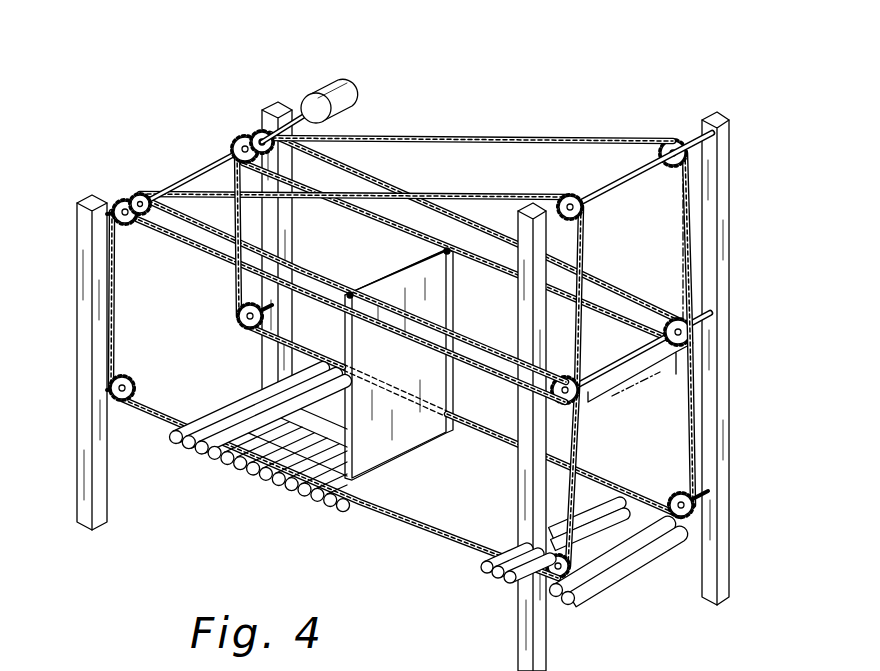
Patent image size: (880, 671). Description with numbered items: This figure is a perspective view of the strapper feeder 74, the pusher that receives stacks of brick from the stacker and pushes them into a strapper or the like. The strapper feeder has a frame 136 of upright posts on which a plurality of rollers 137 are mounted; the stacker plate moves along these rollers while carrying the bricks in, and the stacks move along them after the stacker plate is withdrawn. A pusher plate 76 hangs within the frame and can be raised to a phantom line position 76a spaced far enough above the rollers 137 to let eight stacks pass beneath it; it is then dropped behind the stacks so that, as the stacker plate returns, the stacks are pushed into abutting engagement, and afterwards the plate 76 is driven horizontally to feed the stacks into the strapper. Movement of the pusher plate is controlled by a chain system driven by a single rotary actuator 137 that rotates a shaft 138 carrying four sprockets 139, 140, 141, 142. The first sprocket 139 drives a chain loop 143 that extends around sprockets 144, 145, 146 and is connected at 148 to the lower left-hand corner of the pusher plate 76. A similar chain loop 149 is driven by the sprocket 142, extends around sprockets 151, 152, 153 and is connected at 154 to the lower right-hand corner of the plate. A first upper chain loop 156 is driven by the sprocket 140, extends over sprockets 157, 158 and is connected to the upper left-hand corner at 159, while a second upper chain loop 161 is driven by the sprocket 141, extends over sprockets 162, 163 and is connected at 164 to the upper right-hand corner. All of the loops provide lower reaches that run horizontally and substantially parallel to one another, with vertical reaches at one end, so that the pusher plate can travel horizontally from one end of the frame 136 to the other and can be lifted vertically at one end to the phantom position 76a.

The strapper feeder 74 is at (578, 125).
The pusher plate 76 is at (397, 440).
The phantom line position 76a is at (700, 262).
The frame 136 is at (729, 364).
The rollers 137 is at (325, 86).
The shaft 138 is at (197, 172).
The first sprocket 139 is at (114, 201).
The sprocket 140 is at (143, 196).
The sprocket 141 is at (238, 140).
The sprocket 142 is at (258, 130).
The chain loop 143 is at (203, 234).
The sprocket 144 is at (573, 420).
The sprocket 145 is at (588, 592).
The sprocket 146 is at (133, 384).
The connection 148 is at (340, 483).
The chain loop 149 is at (367, 178).
The sprocket 151 is at (706, 322).
The sprocket 152 is at (676, 492).
The sprocket 153 is at (239, 322).
The connection 154 is at (452, 420).
The first upper chain loop 156 is at (493, 193).
The sprocket 157 is at (572, 198).
The sprocket 158 is at (590, 401).
The connection 159 is at (349, 292).
The second upper chain loop 161 is at (474, 137).
The sprocket 162 is at (670, 140).
The sprocket 163 is at (668, 318).
The connection 164 is at (447, 254).